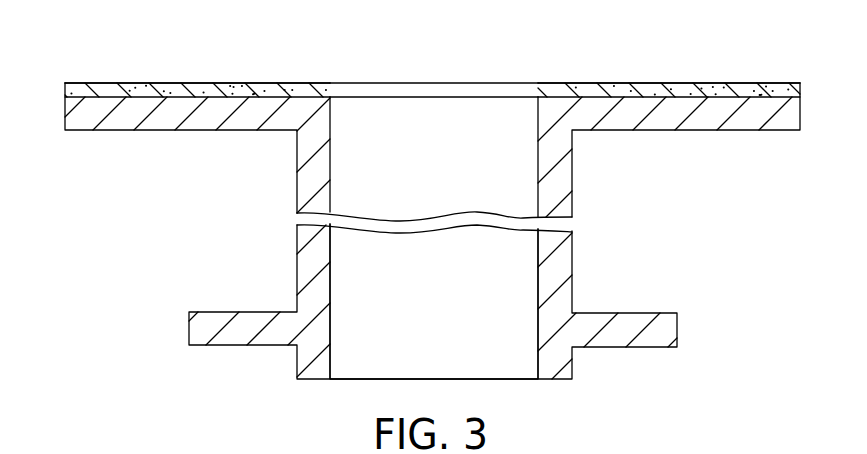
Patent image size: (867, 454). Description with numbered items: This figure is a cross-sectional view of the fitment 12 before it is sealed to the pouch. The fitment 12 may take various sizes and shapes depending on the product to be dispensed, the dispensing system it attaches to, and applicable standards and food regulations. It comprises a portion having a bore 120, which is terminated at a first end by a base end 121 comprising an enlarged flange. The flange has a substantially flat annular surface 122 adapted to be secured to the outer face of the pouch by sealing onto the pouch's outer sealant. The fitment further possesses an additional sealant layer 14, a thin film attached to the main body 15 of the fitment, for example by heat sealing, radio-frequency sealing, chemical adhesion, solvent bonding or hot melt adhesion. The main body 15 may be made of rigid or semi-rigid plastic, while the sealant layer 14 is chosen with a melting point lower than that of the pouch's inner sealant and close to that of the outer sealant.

The fitment 12 is at (409, 202).
The sealant layer 14 is at (290, 82).
The main body 15 is at (331, 283).
The bore 120 is at (390, 116).
The base end 121 is at (62, 83).
The flat annular surface 122 is at (228, 81).